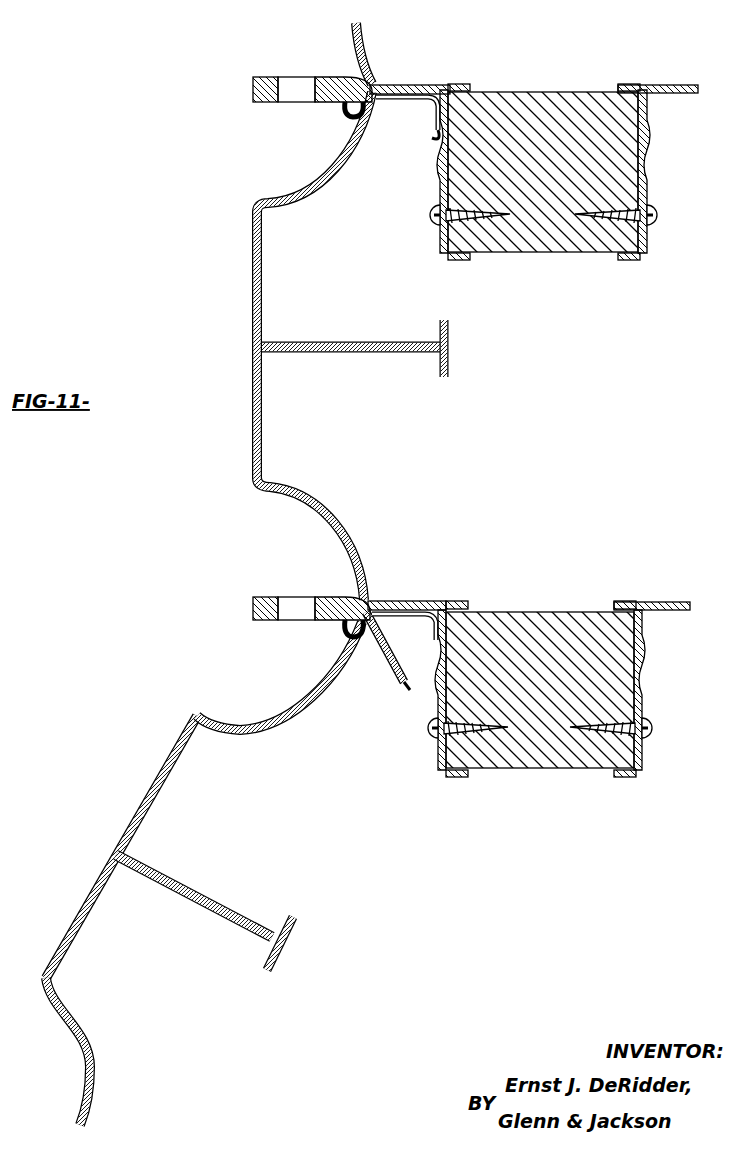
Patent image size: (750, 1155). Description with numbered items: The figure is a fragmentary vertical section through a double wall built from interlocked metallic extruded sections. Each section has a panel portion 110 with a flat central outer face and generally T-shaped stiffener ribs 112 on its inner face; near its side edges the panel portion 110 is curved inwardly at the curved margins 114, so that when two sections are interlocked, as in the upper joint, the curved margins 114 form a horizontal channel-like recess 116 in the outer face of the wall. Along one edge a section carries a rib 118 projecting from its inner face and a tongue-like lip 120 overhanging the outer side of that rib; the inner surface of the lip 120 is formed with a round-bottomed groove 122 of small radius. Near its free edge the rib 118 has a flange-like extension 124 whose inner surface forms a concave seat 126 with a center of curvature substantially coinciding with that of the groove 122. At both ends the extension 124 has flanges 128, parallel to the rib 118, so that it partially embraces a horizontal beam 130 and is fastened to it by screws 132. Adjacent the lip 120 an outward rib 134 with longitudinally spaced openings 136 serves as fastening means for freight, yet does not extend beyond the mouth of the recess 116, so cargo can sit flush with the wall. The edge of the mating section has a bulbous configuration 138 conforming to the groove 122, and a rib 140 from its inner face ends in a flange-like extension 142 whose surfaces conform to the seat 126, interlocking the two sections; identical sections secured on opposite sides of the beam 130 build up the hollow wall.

The panel portion 110 is at (253, 468).
The T-shaped stiffener ribs 112 is at (355, 354).
The curved margins 114 is at (312, 193).
The channel-like recess 116 is at (335, 158).
The rib 118 is at (405, 88).
The lip 120 is at (347, 112).
The round-bottomed groove 122 is at (385, 100).
The flange-like extension 124 is at (432, 170).
The concave seat 126 is at (462, 88).
The flanges 128 is at (460, 84).
The horizontal beam 130 is at (538, 254).
The screws 132 is at (432, 226).
The rib 134 is at (252, 88).
The openings 136 is at (296, 82).
The bulbous configuration 138 is at (346, 84).
The rib 140 is at (374, 84).
The flange-like extension 142 is at (430, 133).